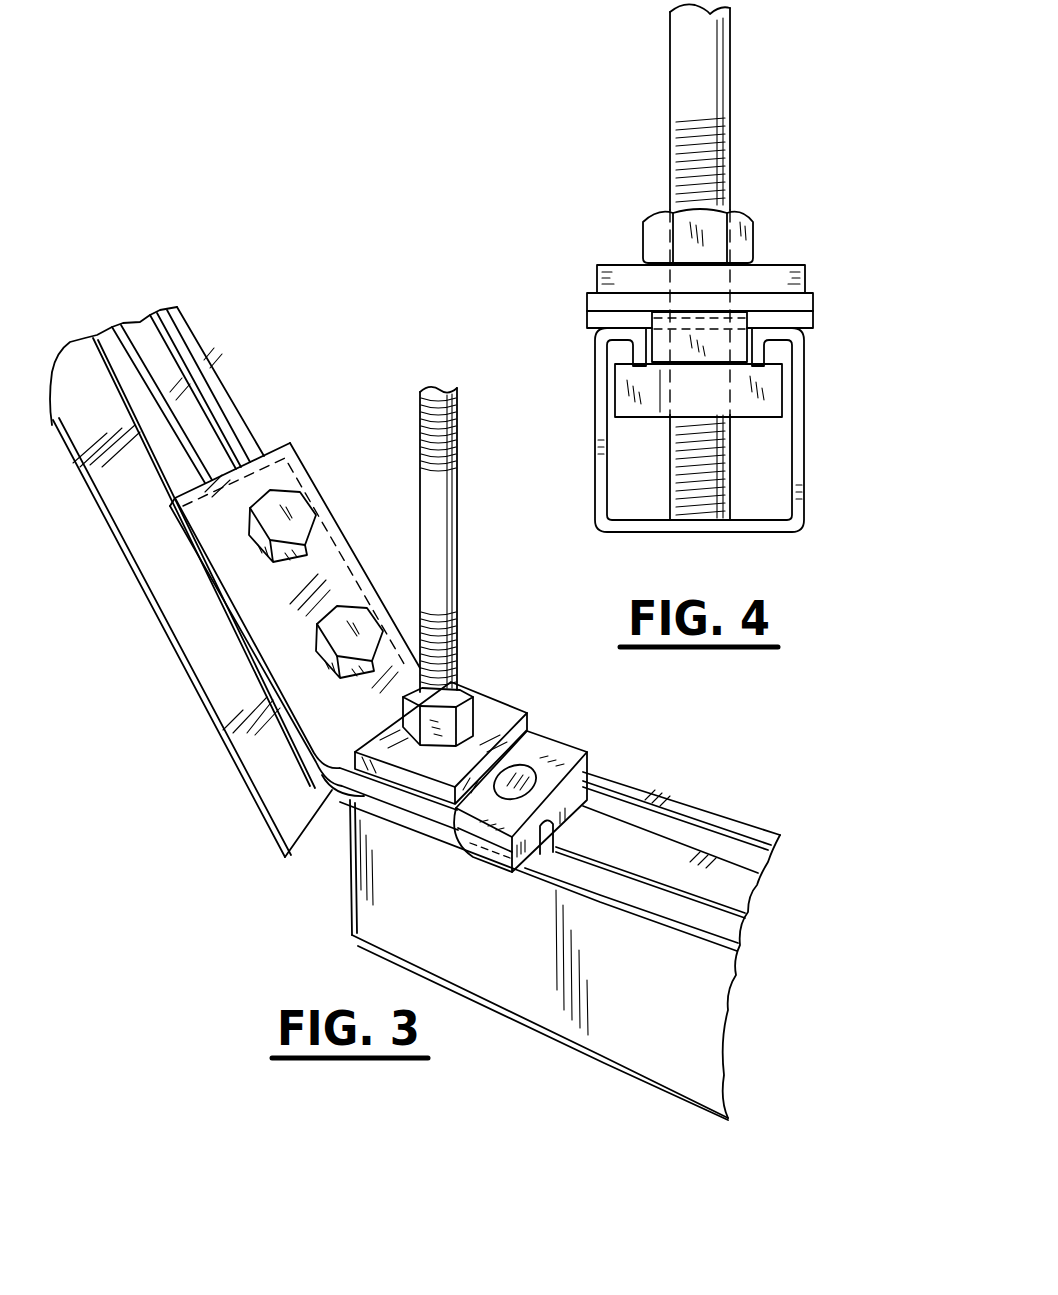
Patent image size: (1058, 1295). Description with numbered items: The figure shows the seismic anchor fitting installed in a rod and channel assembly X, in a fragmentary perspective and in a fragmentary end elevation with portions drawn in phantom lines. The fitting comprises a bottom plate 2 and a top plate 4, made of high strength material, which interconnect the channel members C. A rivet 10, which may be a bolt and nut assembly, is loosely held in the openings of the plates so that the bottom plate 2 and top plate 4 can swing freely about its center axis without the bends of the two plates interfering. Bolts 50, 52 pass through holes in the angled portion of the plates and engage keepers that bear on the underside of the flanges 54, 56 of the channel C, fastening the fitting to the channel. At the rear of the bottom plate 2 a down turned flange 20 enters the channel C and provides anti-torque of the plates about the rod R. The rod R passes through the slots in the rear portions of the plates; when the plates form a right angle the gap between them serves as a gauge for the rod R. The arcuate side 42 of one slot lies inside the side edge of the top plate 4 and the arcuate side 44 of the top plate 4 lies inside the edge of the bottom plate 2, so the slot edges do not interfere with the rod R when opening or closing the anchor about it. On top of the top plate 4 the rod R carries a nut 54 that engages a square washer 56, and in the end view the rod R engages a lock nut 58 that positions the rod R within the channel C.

In FIG. 3, the rod R is at (472, 570).
In FIG. 4, the rod R is at (655, 75).
In FIG. 3, the channel member C is at (180, 698).
In FIG. 4, the channel member C is at (580, 436).
In FIG. 3, the assembly X is at (510, 660).
In FIG. 3, the bottom plate 2 is at (200, 594).
In FIG. 4, the bottom plate 2 is at (588, 322).
In FIG. 3, the top plate 4 is at (355, 526).
In FIG. 4, the top plate 4 is at (587, 296).
In FIG. 3, the rivet 10 is at (558, 740).
In FIG. 4, the rivet 10 is at (670, 300).
In FIG. 3, the down turned flange 20 is at (580, 837).
In FIG. 4, the down turned flange 20 is at (690, 366).
In FIG. 3, the arcuate side 42 is at (540, 743).
In FIG. 3, the arcuate side 44 is at (473, 828).
In FIG. 3, the bolt 50 is at (303, 508).
In FIG. 3, the bolt 52 is at (370, 625).
In FIG. 3, the nut 54 is at (130, 388).
In FIG. 4, the nut 54 is at (747, 217).
In FIG. 3, the square washer 56 is at (203, 370).
In FIG. 4, the square washer 56 is at (775, 263).
In FIG. 4, the lock nut 58 is at (627, 381).